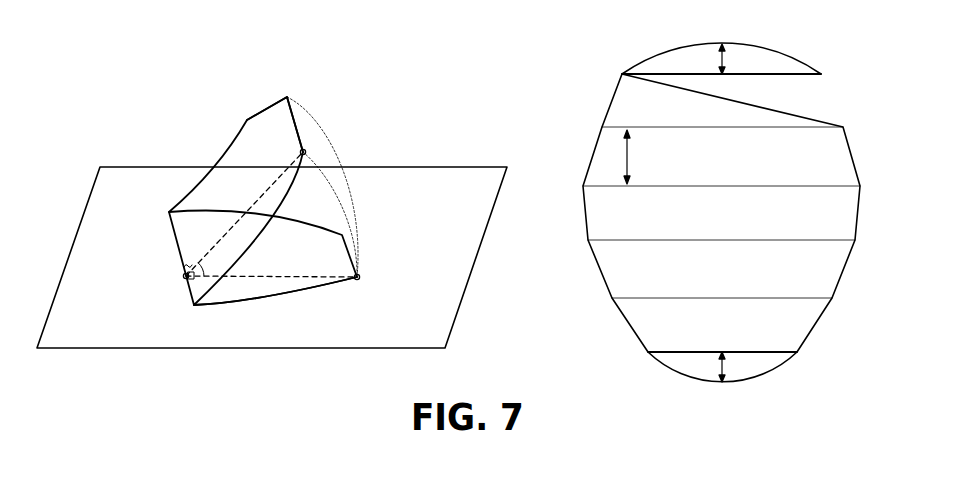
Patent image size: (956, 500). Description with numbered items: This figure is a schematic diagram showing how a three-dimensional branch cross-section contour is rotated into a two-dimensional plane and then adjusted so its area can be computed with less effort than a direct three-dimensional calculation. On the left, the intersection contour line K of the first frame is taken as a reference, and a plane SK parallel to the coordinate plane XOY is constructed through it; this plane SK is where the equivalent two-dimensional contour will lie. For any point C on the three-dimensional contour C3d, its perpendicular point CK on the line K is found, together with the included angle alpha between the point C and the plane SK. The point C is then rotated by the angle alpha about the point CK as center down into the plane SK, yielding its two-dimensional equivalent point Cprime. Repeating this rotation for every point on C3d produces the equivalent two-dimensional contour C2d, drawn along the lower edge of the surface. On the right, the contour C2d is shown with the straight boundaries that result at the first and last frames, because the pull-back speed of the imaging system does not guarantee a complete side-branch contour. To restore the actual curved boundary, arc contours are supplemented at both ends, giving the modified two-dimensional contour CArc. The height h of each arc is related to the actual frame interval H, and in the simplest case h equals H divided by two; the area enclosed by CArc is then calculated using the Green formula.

The plane S_K SK is at (272, 243).
The intersection contour line K is at (241, 201).
The three-dimensional contour C3d is at (292, 182).
The point c C is at (271, 202).
The two-dimensional equivalent point Cprime is at (287, 279).
The perpendicular point CK is at (171, 279).
The included angle alpha is at (209, 265).
The equivalent two-dimensional contour C2d is at (527, 228).
The modified two-dimensional contour CArc is at (721, 43).
The height of the arc h is at (730, 213).
The frame interval H is at (677, 157).